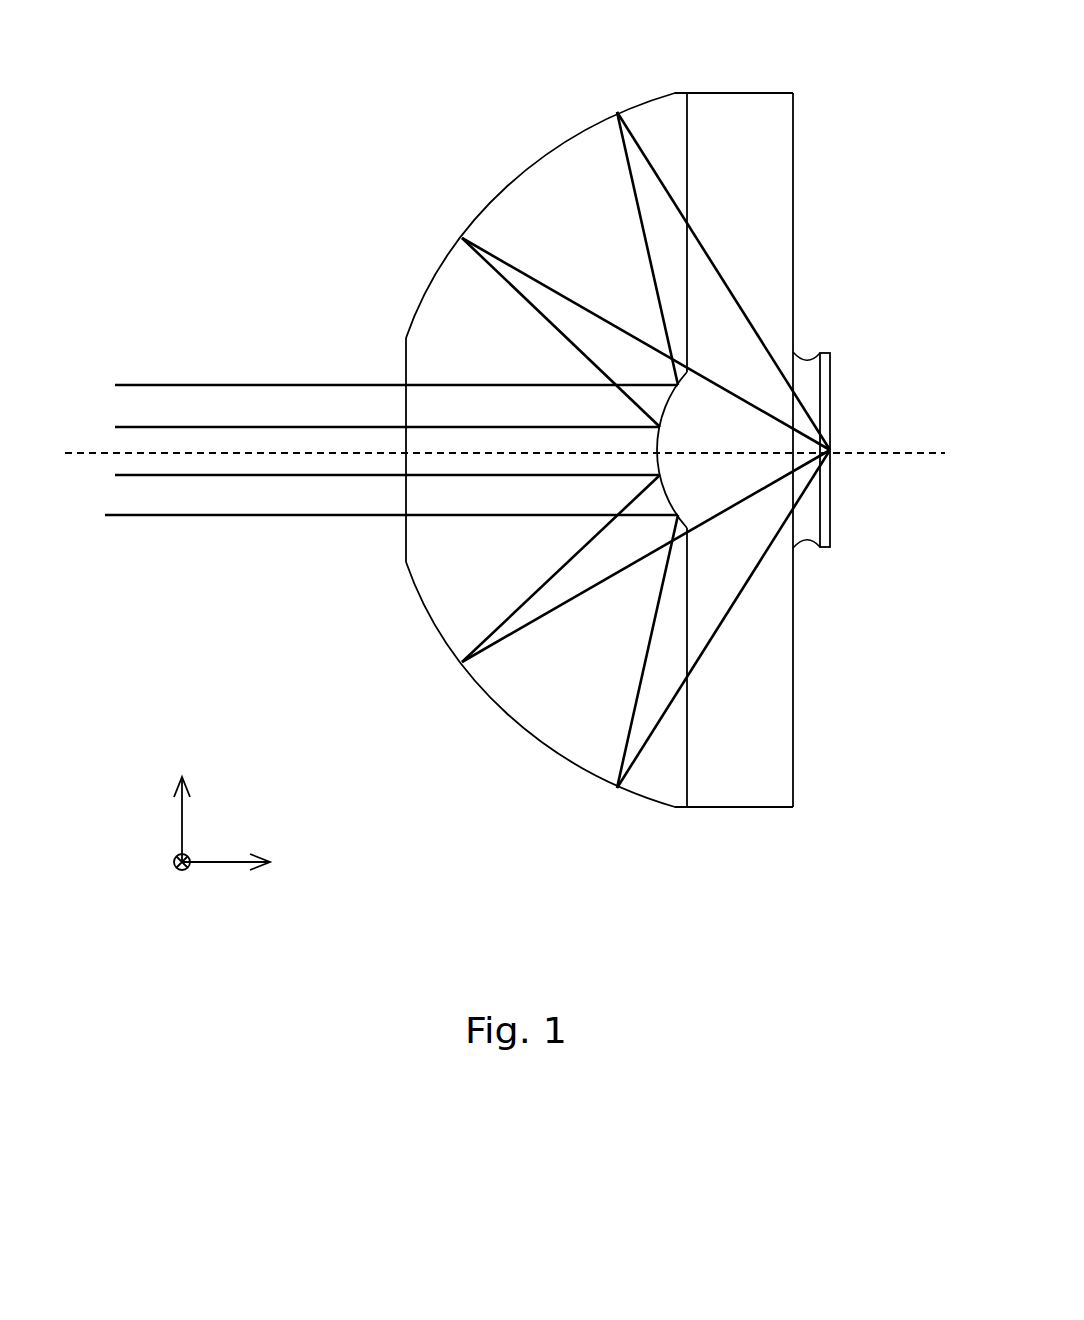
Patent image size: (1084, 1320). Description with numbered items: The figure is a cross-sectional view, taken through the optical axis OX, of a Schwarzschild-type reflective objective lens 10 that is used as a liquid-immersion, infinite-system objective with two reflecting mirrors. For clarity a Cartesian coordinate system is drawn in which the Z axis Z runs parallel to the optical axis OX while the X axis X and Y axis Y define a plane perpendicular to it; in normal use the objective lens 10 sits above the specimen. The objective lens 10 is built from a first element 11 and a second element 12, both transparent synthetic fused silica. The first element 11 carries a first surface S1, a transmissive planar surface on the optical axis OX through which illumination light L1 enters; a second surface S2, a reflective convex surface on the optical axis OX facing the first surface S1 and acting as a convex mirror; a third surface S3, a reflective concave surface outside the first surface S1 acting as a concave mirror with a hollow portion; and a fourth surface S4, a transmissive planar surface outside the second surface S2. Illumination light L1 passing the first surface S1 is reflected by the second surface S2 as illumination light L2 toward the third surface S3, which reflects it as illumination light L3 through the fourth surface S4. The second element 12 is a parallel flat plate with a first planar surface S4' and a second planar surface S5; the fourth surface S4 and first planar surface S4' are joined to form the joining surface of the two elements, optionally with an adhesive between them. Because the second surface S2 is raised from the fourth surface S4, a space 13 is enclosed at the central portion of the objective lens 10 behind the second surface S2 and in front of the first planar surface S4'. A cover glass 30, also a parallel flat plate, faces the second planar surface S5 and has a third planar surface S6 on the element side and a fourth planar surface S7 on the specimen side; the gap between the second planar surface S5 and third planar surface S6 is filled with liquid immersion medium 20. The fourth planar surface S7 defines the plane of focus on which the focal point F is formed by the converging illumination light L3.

The objective lens 10 is at (126, 51).
The first element 11 is at (542, 737).
The second element 12 is at (793, 715).
The space 13 is at (682, 468).
The liquid immersion medium 20 is at (805, 362).
The cover glass 30 is at (832, 508).
The first surface S1 is at (405, 408).
The second surface S2 is at (660, 437).
The third surface S3 is at (518, 170).
The fourth surface S4 is at (716, 207).
The first planar surface S4' is at (657, 694).
The second planar surface S5 is at (793, 152).
The third planar surface S6 is at (819, 536).
The fourth planar surface S7 is at (833, 390).
The focal point F is at (835, 452).
The optical axis OX is at (75, 457).
The illumination light L1 is at (178, 517).
The illumination light L2 is at (633, 715).
The illumination light L3 is at (713, 637).
The X-axis X is at (182, 798).
The Y-axis Y is at (173, 877).
The Z-axis Z is at (239, 863).